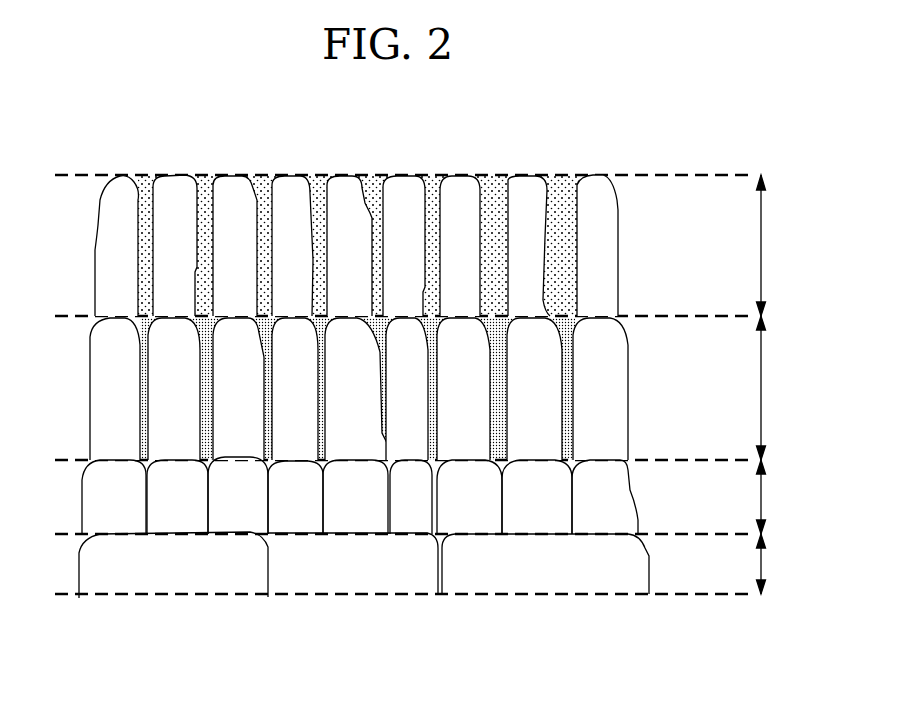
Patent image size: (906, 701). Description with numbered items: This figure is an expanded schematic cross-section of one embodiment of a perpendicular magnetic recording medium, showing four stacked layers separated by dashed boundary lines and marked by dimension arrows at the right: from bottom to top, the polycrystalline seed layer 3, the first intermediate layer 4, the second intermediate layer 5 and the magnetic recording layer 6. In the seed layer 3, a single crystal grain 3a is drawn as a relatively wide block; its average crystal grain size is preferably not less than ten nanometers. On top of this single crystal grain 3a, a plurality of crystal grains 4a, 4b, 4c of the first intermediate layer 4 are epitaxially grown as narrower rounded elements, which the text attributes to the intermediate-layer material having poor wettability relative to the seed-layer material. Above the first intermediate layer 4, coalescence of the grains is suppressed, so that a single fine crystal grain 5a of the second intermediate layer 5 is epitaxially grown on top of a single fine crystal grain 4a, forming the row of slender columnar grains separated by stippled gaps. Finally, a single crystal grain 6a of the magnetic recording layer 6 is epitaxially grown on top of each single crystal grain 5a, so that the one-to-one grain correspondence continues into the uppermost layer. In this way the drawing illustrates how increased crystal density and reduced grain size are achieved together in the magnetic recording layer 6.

The magnetic recording layer 6 is at (418, 245).
The second intermediate layer 5 is at (418, 388).
The first intermediate layer 4 is at (418, 497).
The seed layer 3 is at (418, 564).
The crystal grain of the magnetic recording layer 6a is at (603, 253).
The crystal grain of the second intermediate layer 5a is at (603, 393).
The crystal grain of the first intermediate layer 4a is at (615, 500).
The crystal grain of the first intermediate layer 4b is at (537, 512).
The crystal grain of the first intermediate layer 4c is at (471, 512).
The crystal grain of the seed layer 3a is at (591, 578).